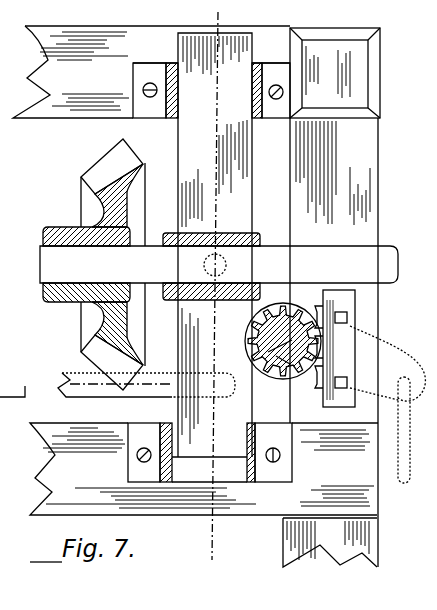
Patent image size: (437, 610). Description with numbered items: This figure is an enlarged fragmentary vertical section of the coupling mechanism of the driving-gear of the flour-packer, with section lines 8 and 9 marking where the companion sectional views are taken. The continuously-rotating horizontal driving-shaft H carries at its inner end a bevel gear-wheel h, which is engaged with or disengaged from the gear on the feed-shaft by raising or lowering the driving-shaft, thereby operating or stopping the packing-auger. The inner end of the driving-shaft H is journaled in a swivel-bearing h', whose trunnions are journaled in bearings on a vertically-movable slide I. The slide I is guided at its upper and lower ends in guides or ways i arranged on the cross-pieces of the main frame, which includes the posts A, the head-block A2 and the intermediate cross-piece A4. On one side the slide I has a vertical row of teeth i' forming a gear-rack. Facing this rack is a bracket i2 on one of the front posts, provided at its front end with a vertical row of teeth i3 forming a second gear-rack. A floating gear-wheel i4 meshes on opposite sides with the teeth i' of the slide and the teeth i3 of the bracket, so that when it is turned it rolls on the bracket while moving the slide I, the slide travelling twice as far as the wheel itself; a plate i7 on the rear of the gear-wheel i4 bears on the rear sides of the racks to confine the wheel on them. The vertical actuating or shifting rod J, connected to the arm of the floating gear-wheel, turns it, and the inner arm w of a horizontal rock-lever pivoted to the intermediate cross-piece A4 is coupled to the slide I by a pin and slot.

The posts A is at (40, 77).
The head-block A2 is at (318, 86).
The intermediate cross-piece A4 is at (52, 490).
The driving-shaft H is at (140, 270).
The bevel gear-wheel h is at (94, 264).
The swivel-bearing h' is at (219, 255).
The slide I is at (215, 245).
The guides or ways i is at (210, 272).
The teeth i' is at (275, 341).
The bracket i2 is at (341, 339).
The teeth i3 is at (325, 361).
The floating gear-wheel i4 is at (271, 372).
The plate i7 is at (283, 384).
The inner arm w is at (117, 380).
The section line 8 is at (213, 288).
The stud leader 9 is at (347, 316).
The actuating or shifting rod J is at (387, 404).